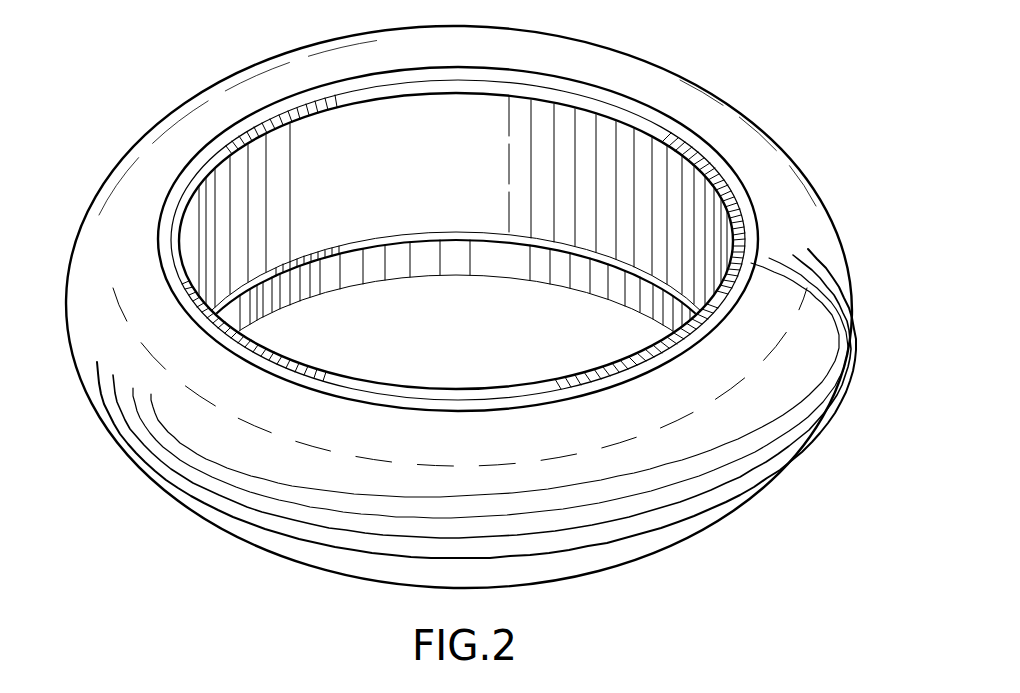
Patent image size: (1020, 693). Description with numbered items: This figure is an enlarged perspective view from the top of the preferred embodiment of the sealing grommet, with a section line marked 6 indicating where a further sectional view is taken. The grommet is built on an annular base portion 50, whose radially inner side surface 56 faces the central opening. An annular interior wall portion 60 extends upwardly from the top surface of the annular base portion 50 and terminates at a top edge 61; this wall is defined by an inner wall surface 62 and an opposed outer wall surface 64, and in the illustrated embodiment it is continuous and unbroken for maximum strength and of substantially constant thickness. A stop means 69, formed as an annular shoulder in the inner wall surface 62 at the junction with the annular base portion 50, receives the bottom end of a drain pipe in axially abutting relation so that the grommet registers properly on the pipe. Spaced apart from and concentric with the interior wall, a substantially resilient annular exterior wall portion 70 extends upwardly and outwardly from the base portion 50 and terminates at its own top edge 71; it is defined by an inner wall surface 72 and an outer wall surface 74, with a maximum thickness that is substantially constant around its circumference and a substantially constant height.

The section line 6- 6 is at (148, 165).
The annular base portion 50 is at (468, 273).
The radially inner side surface 56 is at (369, 275).
The annular interior wall portion 60 is at (503, 110).
The top edge 61 is at (303, 124).
The inner wall surface 62 is at (489, 182).
The outer wall surface 64 is at (208, 333).
The stop means 69 is at (331, 252).
The annular exterior wall portion 70 is at (778, 163).
The top edge 71 is at (658, 367).
The inner wall surface 72 is at (683, 103).
The outer wall surface 74 is at (845, 352).